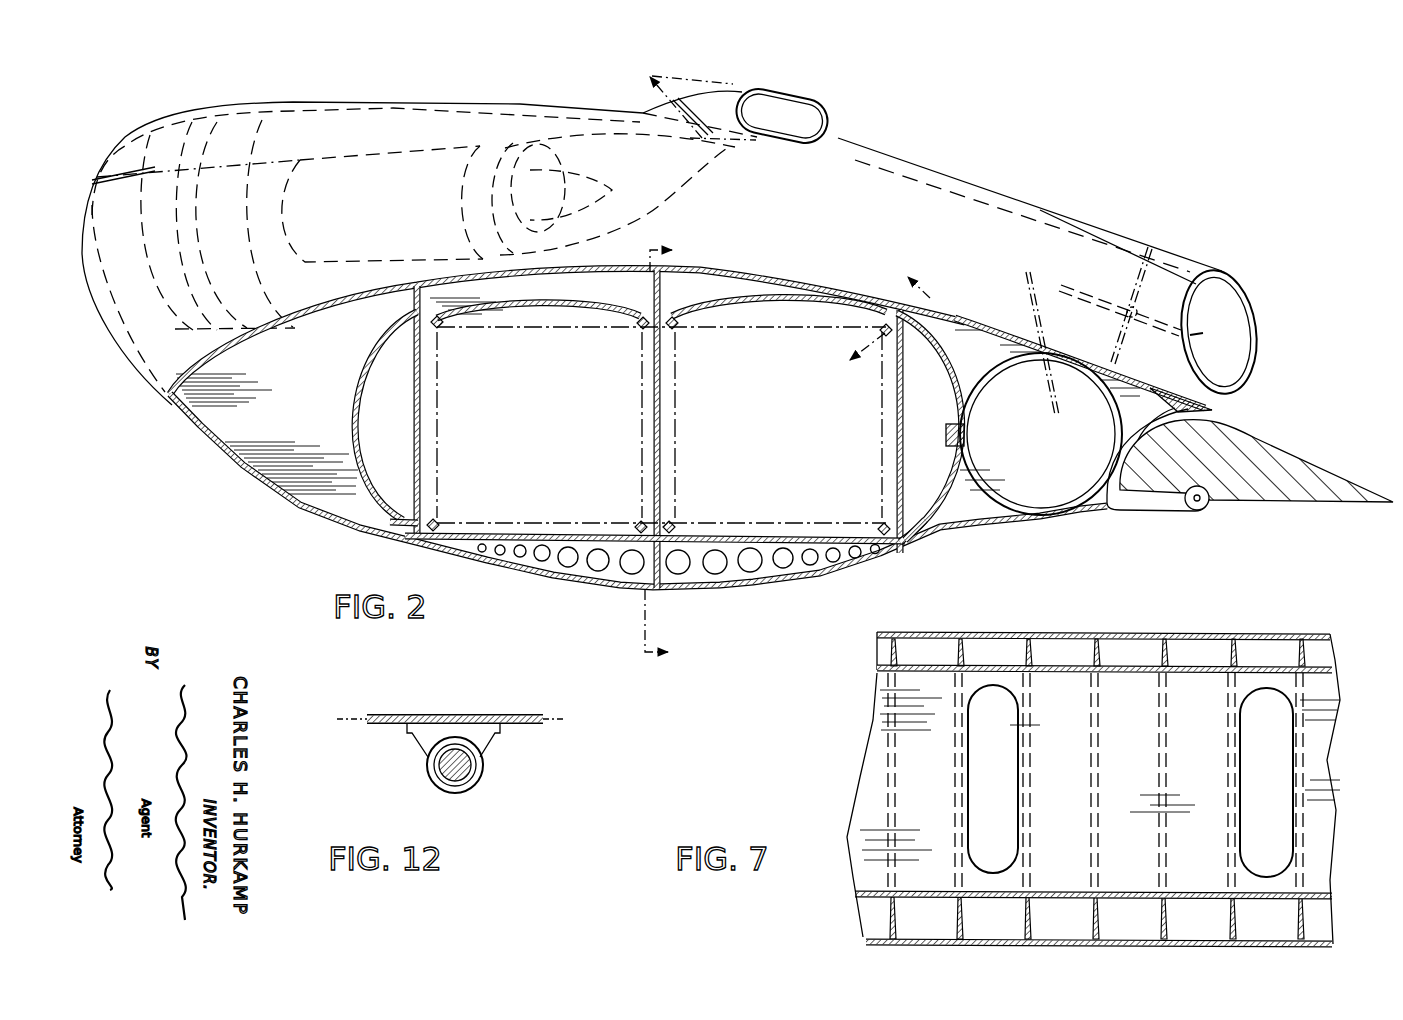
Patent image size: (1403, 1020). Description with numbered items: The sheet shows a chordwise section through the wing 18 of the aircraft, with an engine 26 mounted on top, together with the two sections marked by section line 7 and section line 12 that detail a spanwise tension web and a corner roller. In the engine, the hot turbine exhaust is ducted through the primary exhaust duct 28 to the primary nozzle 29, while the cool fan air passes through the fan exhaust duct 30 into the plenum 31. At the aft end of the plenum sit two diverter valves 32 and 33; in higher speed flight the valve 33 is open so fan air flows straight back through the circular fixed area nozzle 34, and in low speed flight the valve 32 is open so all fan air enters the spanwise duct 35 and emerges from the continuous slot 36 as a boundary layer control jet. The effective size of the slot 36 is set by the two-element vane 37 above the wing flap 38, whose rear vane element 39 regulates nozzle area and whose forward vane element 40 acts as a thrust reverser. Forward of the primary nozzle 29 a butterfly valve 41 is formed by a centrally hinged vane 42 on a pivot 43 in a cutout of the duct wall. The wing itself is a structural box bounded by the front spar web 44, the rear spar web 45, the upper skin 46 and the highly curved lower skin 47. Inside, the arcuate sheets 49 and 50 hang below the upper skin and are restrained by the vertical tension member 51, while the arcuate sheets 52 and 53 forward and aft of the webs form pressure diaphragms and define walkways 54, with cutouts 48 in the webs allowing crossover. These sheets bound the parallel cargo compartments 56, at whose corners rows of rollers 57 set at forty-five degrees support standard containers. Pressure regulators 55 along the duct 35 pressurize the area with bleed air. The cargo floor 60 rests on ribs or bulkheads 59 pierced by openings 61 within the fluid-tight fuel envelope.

In FIG. 2, the section line 7— 7 is at (670, 449).
In FIG. 2, the section line 12— 12 is at (872, 307).
In FIG. 2, the wing 18 is at (248, 508).
In FIG. 2, the turbofan engine 26 is at (370, 222).
In FIG. 2, the primary exhaust duct 28 is at (603, 170).
In FIG. 2, the primary nozzle 29 is at (846, 120).
In FIG. 2, the fan exhaust duct 30 is at (403, 143).
In FIG. 2, the plenum 31 is at (777, 208).
In FIG. 2, the diverter valve 32 is at (991, 328).
In FIG. 2, the diverter valve 33 is at (1204, 333).
In FIG. 2, the circular fixed area nozzle 34 is at (1258, 348).
In FIG. 2, the spanwise duct 35 is at (1058, 469).
In FIG. 2, the continuous slot 36 is at (1212, 414).
In FIG. 2, the two-element vane 37 is at (1163, 380).
In FIG. 2, the wing flap 38 is at (1302, 452).
In FIG. 2, the rear vane element 39 is at (1216, 404).
In FIG. 2, the forward vane element 40 is at (1166, 406).
In FIG. 2, the butterfly valve 41 is at (646, 88).
In FIG. 2, the centrally hinged vane 42 is at (702, 143).
In FIG. 2, the pivot 43 is at (684, 101).
In FIG. 2, the front spar web 44 is at (421, 462).
In FIG. 2, the rear spar web 45 is at (896, 453).
In FIG. 12, the rear spar web 45 is at (540, 724).
In FIG. 2, the upper skin 46 is at (786, 288).
In FIG. 7, the upper skin 46 is at (1143, 632).
In FIG. 2, the lower skin 47 is at (554, 580).
In FIG. 7, the lower skin 47 is at (866, 940).
In FIG. 7, the cutout 48 is at (982, 772).
In FIG. 2, the arcuate sheet 49 is at (510, 310).
In FIG. 2, the arcuate sheet 50 is at (748, 310).
In FIG. 2, the vertical tension member 51 is at (652, 438).
In FIG. 7, the vertical tension member 51 is at (1116, 737).
In FIG. 2, the arcuate sheet 52 is at (384, 366).
In FIG. 2, the arcuate sheet 53 is at (922, 358).
In FIG. 2, the walkway 54 is at (398, 516).
In FIG. 2, the pressure regulator 55 is at (966, 442).
In FIG. 2, the cargo compartment 56 is at (515, 418).
In FIG. 2, the roller 57 is at (444, 328).
In FIG. 12, the roller 57 is at (483, 783).
In FIG. 2, the rib or bulkhead 59 is at (809, 537).
In FIG. 7, the rib or bulkhead 59 is at (1028, 905).
In FIG. 2, the cargo floor 60 is at (752, 536).
In FIG. 7, the cargo floor 60 is at (1180, 892).
In FIG. 2, the opening 61 is at (708, 575).